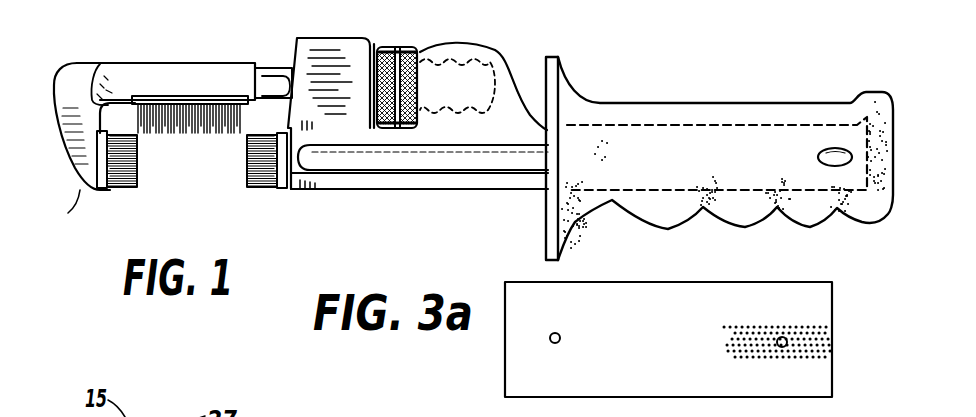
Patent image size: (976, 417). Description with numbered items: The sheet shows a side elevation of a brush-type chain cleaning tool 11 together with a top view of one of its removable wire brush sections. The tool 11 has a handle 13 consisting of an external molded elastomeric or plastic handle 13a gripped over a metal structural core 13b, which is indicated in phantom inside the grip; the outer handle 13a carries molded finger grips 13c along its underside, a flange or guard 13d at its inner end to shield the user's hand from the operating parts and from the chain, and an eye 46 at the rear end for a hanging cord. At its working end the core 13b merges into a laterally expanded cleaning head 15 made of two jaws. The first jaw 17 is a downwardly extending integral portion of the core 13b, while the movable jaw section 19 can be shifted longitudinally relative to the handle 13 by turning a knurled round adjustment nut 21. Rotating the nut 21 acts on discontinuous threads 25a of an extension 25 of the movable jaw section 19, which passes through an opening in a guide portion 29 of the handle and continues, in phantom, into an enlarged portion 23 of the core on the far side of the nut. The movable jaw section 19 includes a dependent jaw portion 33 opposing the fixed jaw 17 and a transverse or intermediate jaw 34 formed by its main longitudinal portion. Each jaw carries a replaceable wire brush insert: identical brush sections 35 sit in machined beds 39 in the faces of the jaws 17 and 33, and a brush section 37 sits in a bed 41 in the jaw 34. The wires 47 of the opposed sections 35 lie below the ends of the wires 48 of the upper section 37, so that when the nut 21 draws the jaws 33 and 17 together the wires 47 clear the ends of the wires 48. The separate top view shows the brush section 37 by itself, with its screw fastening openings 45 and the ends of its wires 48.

In FIG. 1, the tool 11 is at (617, 62).
In FIG. 1, the handle 13 is at (651, 168).
In FIG. 1, the external handle 13a is at (708, 104).
In FIG. 1, the metal structural core 13b is at (648, 125).
In FIG. 1, the finger grips 13c is at (703, 210).
In FIG. 1, the flange or guard 13d is at (423, 194).
In FIG. 1, the cleaning head 15 is at (193, 54).
In FIG. 1, the first jaw 17 is at (330, 178).
In FIG. 1, the movable jaw section 19 is at (95, 72).
In FIG. 1, the knurled adjustment nut 21 is at (421, 52).
In FIG. 1, the enlarged portion 23 is at (522, 98).
In FIG. 1, the extension 25 is at (263, 64).
In FIG. 1, the discontinuous threads 25a is at (285, 62).
In FIG. 1, the guide portion 29 is at (352, 47).
In FIG. 1, the dependent jaw portion 33 is at (54, 90).
In FIG. 1, the transverse jaw 34 is at (233, 90).
In FIG. 1, the replaceable brush sections 35 is at (307, 212).
In FIG. 1, the replaceable brush section 37 is at (148, 97).
In FIG. 3a, the replaceable brush section 37 is at (733, 282).
In FIG. 1, the beds 39 is at (100, 190).
In FIG. 1, the bed 41 is at (172, 96).
In FIG. 3a, the screw fastening openings 45 is at (548, 340).
In FIG. 1, the eye 46 is at (817, 157).
In FIG. 1, the wires 47 is at (128, 188).
In FIG. 1, the wires 48 is at (173, 136).
In FIG. 3a, the wires 48 is at (797, 353).